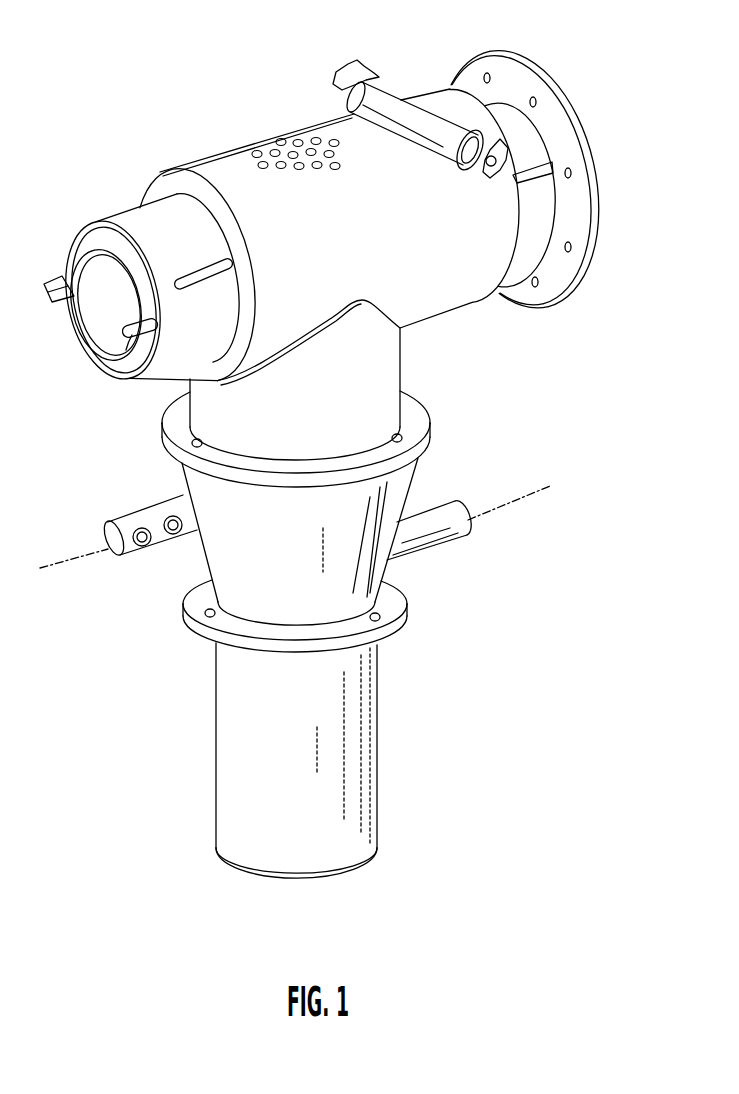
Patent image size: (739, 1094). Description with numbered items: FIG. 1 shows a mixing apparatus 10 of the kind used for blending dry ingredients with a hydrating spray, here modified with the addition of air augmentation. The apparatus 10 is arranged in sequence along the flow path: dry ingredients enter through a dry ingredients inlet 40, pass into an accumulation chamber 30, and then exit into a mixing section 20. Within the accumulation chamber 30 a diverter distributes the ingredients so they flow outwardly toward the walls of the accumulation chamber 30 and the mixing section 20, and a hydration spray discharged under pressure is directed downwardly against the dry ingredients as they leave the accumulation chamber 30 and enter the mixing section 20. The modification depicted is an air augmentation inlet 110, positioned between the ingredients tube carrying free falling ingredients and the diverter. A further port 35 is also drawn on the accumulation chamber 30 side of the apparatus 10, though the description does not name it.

The mixing apparatus 10 is at (227, 66).
The mixing section 20 is at (198, 737).
The accumulation chamber 30 is at (408, 572).
The right side port pipe 35 is at (440, 506).
The dry ingredients inlet 40 is at (126, 206).
The air augmentation inlet 110 is at (147, 503).